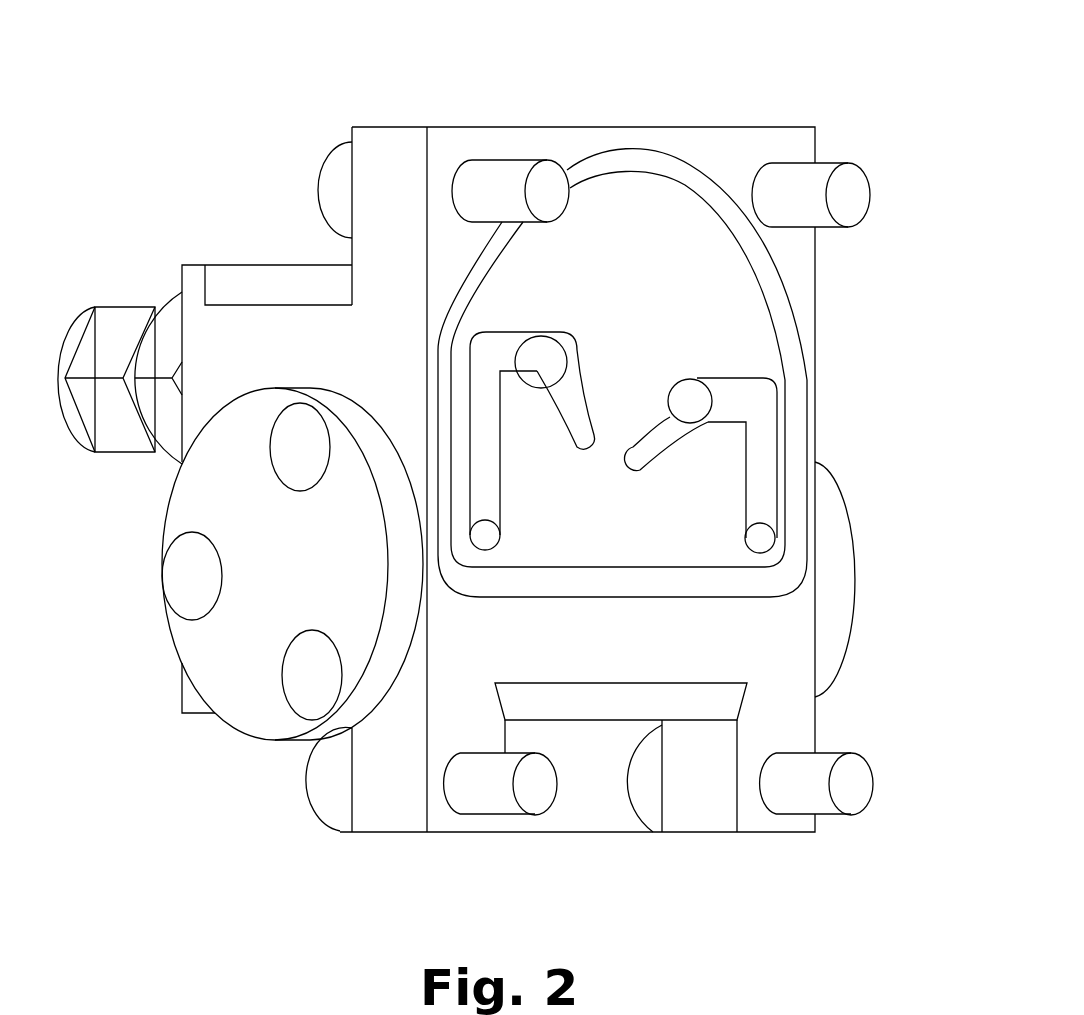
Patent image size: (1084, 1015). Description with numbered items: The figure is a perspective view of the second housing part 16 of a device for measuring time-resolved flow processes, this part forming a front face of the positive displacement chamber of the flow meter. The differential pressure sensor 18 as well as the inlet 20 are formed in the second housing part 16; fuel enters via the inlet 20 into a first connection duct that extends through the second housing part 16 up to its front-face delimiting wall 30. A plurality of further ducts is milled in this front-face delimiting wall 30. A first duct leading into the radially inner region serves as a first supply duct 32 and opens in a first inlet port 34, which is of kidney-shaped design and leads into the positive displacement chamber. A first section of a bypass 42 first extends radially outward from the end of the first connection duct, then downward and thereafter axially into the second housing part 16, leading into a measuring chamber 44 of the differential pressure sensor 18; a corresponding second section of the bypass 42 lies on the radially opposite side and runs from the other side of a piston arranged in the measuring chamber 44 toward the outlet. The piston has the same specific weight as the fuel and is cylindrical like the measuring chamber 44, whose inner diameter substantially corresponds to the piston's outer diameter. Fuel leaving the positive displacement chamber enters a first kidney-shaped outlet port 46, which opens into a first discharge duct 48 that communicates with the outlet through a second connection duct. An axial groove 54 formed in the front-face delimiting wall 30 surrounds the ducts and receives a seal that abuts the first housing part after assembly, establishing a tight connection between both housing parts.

The second housing part 16 is at (387, 244).
The differential pressure sensor 18 is at (290, 578).
The inlet 20 is at (107, 332).
The front-face delimiting wall 30 is at (756, 335).
The first supply duct 32 is at (545, 357).
The first inlet port 34 is at (560, 410).
The bypass 42 is at (485, 457).
The measuring chamber 44 is at (279, 616).
The first kidney-shaped outlet port 46 is at (665, 445).
The first discharge duct 48 is at (695, 398).
The axial groove 54 is at (652, 168).